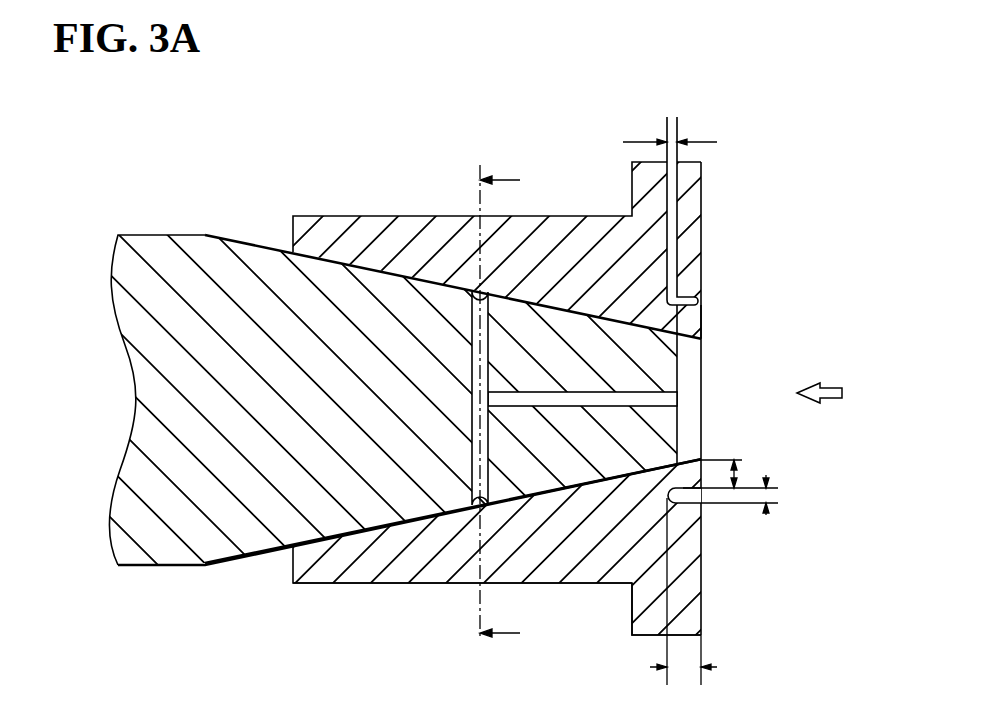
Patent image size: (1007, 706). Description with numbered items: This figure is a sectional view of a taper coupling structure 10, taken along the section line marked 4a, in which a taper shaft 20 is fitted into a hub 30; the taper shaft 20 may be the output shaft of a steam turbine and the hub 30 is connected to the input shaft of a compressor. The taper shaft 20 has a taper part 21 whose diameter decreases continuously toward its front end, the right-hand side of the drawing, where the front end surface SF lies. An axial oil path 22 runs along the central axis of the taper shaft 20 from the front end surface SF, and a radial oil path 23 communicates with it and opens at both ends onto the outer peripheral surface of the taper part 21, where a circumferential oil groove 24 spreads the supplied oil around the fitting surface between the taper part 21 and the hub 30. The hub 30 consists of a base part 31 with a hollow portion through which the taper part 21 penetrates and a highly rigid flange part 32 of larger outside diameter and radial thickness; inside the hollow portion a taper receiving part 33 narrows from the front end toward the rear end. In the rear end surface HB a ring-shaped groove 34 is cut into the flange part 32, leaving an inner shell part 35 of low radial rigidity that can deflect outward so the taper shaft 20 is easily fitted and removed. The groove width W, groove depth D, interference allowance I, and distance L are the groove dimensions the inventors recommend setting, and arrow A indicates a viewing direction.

The taper coupling structure 10 is at (289, 158).
The taper shaft 20 is at (185, 237).
The taper part 21 is at (242, 567).
The axial oil path 22 is at (665, 398).
The radial oil path 23 is at (490, 335).
The oil groove 24 is at (478, 290).
The hub 30 is at (330, 217).
The base part 31 is at (362, 585).
The flange part 32 is at (632, 617).
The taper receiving part 33 is at (416, 512).
The groove 34 is at (699, 298).
The inner shell part 35 is at (702, 322).
The section line 4a is at (515, 405).
The rear end surface HB is at (703, 243).
The front end surface SF is at (681, 432).
The viewing direction arrow A is at (831, 395).
The interference allowance I is at (670, 130).
The distance L is at (745, 472).
The groove width W is at (770, 495).
The groove depth D is at (683, 598).